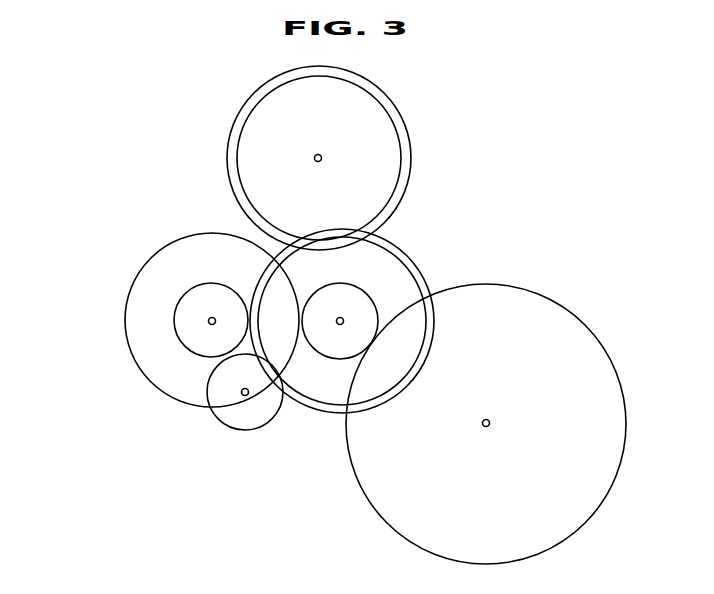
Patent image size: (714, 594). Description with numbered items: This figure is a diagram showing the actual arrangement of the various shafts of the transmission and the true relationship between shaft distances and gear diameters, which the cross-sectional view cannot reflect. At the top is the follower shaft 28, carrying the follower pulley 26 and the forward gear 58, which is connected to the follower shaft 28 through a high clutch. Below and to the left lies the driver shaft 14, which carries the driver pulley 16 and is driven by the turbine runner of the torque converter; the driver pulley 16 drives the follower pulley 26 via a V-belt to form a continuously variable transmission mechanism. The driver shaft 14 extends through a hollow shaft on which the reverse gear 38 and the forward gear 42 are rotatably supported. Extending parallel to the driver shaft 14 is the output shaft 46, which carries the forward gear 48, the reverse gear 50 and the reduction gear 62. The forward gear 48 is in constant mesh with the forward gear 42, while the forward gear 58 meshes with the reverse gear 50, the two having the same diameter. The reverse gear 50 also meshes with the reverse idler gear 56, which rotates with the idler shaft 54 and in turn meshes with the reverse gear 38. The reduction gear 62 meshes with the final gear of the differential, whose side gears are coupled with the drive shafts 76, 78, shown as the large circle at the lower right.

The driver shaft 14 is at (212, 317).
The driver pulley 16 is at (190, 228).
The follower pulley 26 is at (243, 99).
The follower shaft 28 is at (322, 158).
The reverse gear on the driver shaft side 38 is at (151, 320).
The forward gear on the driver shaft side 42 is at (175, 325).
The output shaft 46 is at (340, 325).
The forward gear on the output shaft side 48 is at (403, 245).
The reverse gear on the output shaft side 50 is at (412, 280).
The idler shaft 54 is at (243, 389).
The reverse idler gear 56 is at (272, 420).
The forward gear on the follower shaft side 58 is at (397, 137).
The reduction gear 62 is at (360, 289).
The drive shaft 76 is at (486, 424).
The drive shaft 78 is at (490, 422).